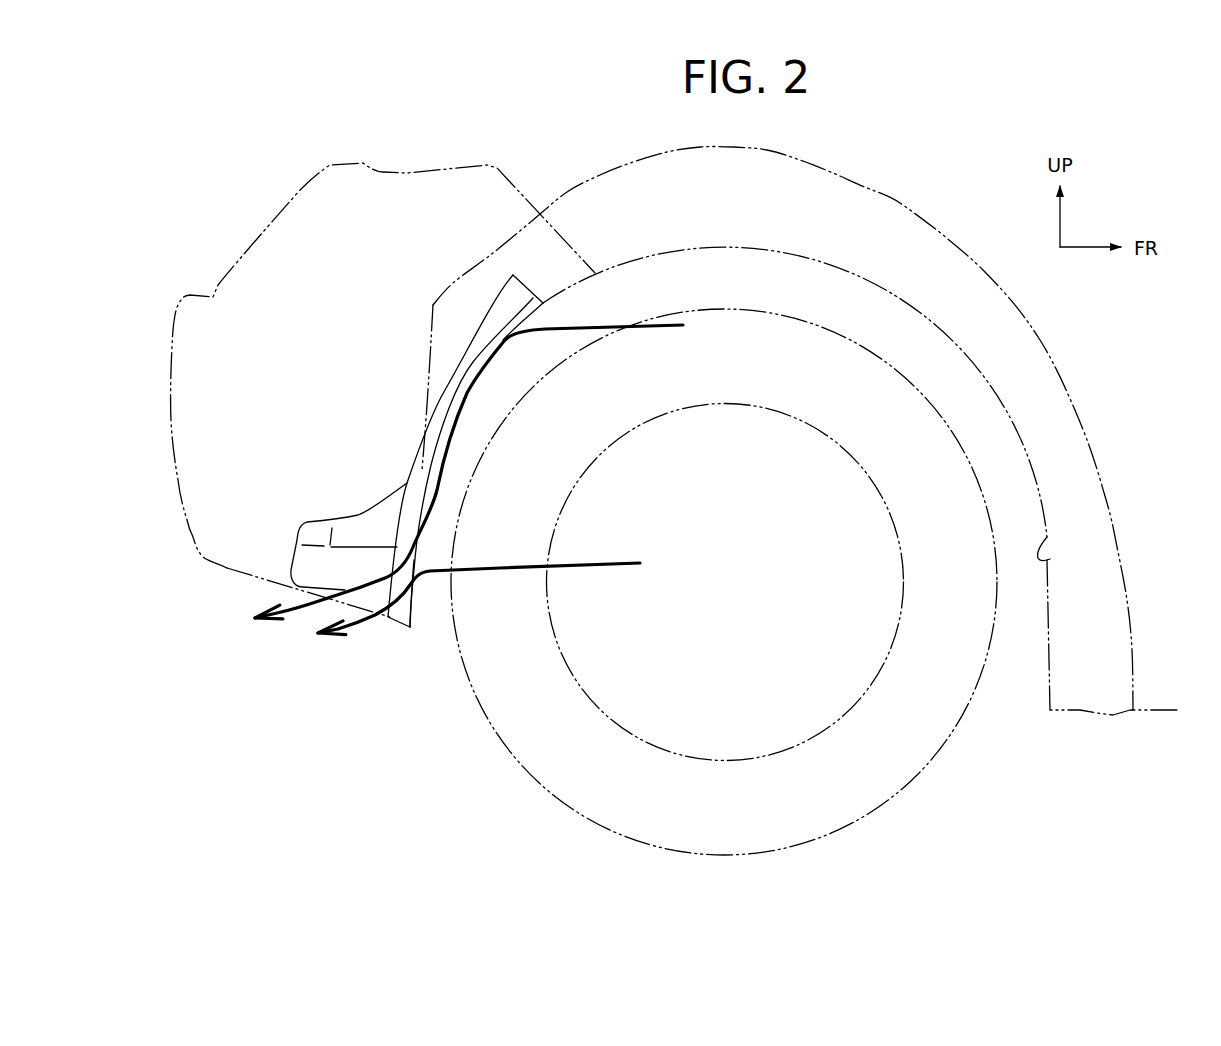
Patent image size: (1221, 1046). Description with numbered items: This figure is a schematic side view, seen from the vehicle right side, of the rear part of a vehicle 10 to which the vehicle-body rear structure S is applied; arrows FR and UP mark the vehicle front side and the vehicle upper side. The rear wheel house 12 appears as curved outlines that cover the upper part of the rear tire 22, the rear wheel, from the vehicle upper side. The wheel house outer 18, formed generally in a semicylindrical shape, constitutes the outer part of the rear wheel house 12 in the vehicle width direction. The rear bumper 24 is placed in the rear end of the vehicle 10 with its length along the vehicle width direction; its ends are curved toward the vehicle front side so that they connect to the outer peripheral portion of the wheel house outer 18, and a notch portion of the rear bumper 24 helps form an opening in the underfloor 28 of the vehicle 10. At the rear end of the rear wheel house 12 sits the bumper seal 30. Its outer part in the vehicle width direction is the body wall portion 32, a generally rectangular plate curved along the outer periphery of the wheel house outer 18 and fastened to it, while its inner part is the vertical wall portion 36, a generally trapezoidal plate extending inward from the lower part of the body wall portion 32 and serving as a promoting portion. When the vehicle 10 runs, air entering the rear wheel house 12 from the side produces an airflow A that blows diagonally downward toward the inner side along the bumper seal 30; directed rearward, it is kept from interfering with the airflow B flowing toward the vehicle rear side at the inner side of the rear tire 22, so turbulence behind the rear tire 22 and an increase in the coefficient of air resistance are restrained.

The vehicle 10 is at (942, 214).
The rear wheel house 12 is at (1050, 559).
The wheel house outer 18 is at (1082, 470).
The rear tire 22 is at (492, 717).
The rear bumper 24 is at (263, 228).
The underfloor 28 is at (232, 570).
The bumper seal 30 is at (391, 489).
The body wall portion 32 is at (442, 440).
The vertical wall portion 36 is at (360, 527).
The airflow A is at (647, 328).
The airflow B is at (617, 567).
The vehicle-body rear structure S is at (369, 650).